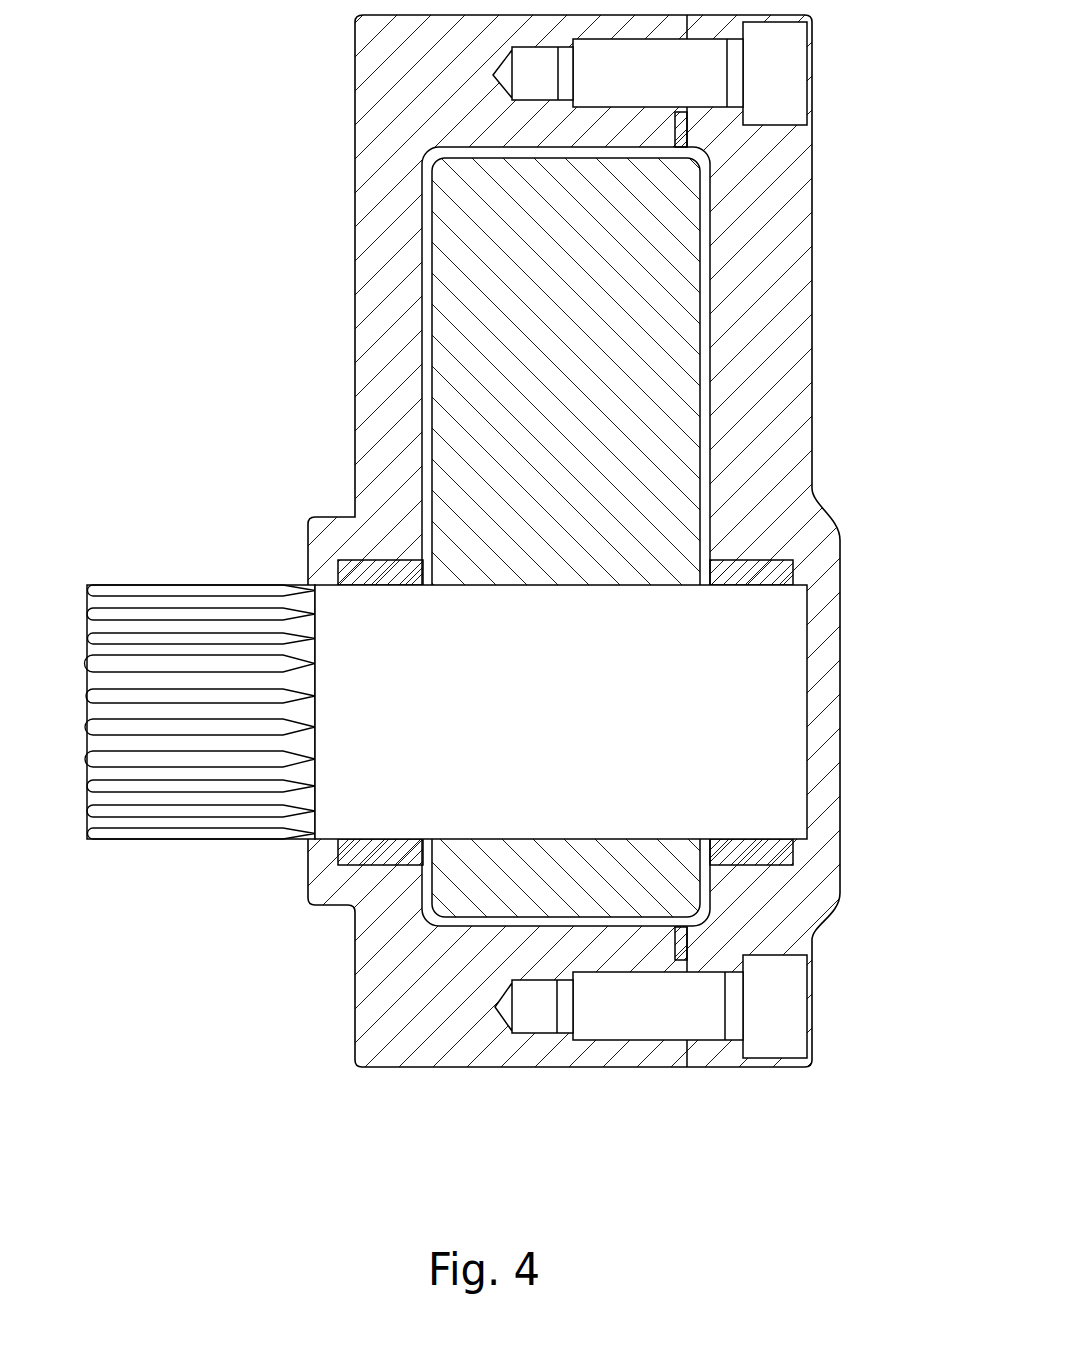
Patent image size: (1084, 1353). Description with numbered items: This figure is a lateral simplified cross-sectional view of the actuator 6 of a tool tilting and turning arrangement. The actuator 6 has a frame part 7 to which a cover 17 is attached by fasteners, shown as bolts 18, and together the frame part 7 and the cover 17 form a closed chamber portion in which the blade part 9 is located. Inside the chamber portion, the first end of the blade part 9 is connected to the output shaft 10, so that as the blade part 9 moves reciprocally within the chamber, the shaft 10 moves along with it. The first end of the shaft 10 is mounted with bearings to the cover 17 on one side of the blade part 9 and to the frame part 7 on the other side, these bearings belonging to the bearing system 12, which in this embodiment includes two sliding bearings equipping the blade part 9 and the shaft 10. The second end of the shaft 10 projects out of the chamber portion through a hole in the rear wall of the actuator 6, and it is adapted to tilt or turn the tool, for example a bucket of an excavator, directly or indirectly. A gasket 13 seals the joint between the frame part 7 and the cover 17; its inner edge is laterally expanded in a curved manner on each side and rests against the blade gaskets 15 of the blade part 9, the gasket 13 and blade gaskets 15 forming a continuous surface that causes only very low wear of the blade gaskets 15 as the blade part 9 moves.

The actuator 6 is at (177, 230).
The frame part 7 is at (362, 392).
The blade part 9 is at (443, 255).
The output shaft 10 is at (582, 728).
The bearing system 12 is at (793, 575).
The gasket 13 is at (690, 132).
The blade gaskets 15 is at (707, 272).
The cover 17 is at (805, 405).
The bolts 18 is at (795, 53).